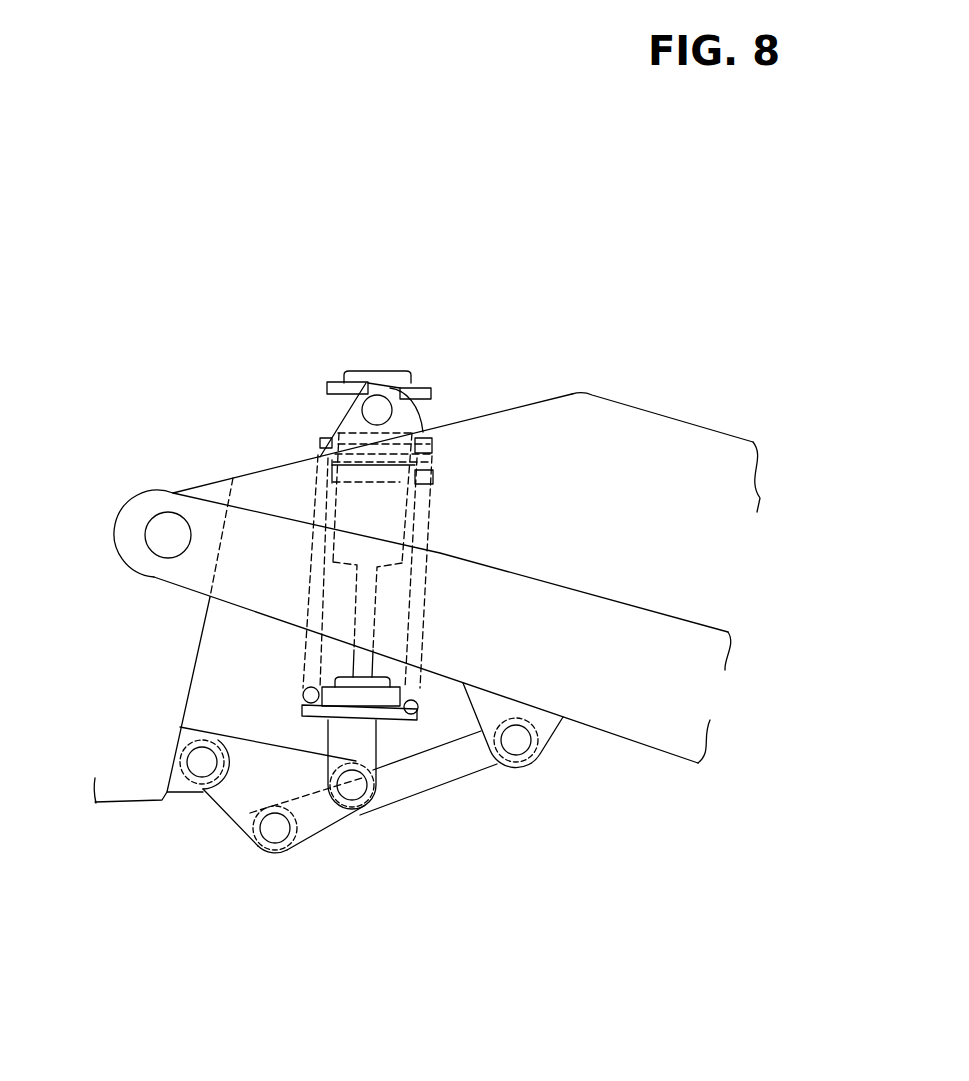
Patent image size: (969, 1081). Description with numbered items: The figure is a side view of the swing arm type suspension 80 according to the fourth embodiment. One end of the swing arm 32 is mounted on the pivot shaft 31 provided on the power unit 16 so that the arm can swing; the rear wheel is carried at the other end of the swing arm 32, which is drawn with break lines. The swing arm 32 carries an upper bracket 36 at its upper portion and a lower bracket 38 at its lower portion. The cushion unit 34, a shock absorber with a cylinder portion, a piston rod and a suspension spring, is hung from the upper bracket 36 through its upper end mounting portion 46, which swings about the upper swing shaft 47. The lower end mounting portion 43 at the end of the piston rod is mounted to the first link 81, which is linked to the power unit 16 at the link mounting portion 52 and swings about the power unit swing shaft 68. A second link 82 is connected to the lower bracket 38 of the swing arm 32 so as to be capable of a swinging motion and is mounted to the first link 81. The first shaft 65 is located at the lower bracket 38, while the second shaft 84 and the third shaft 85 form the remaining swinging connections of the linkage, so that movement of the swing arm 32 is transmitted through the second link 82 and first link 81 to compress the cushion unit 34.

The power unit 16 is at (232, 476).
The pivot shaft 31 is at (147, 531).
The swing arm 32 is at (659, 408).
The cushion unit 34 is at (361, 333).
The upper bracket 36 is at (424, 400).
The lower bracket 38 is at (549, 740).
The lower end mounting portion 43 is at (378, 744).
The upper end mounting portion 46 is at (328, 390).
The upper swing shaft 47 is at (330, 416).
The link mounting portion 52 is at (177, 792).
The first shaft 65 is at (523, 768).
The power unit swing shaft 68 is at (201, 741).
The swing arm type suspension 80 is at (512, 331).
The first link 81 is at (224, 810).
The second link 82 is at (450, 783).
The second shaft 84 is at (366, 808).
The third shaft 85 is at (275, 852).